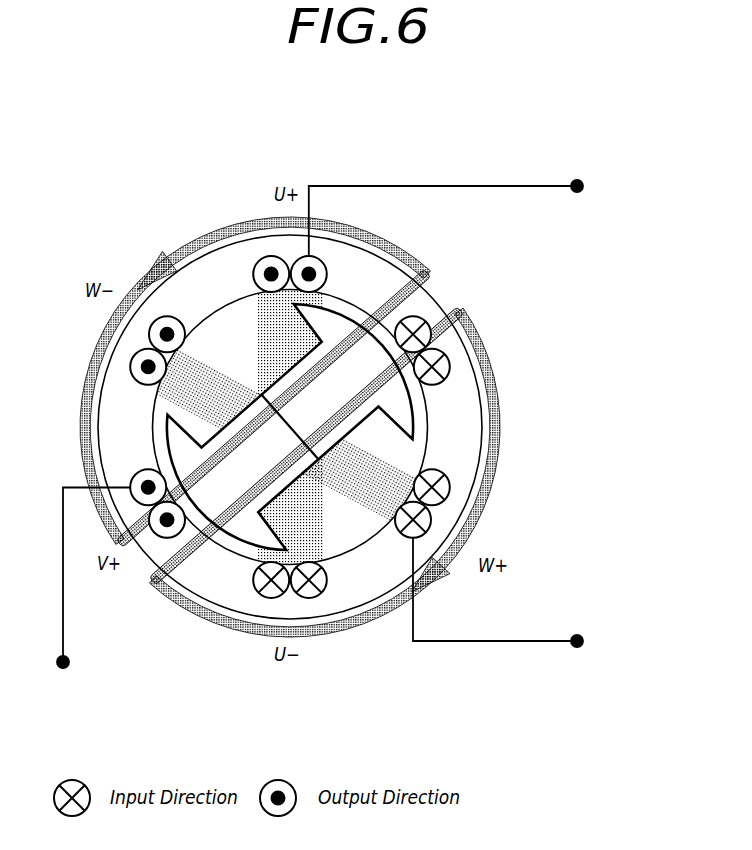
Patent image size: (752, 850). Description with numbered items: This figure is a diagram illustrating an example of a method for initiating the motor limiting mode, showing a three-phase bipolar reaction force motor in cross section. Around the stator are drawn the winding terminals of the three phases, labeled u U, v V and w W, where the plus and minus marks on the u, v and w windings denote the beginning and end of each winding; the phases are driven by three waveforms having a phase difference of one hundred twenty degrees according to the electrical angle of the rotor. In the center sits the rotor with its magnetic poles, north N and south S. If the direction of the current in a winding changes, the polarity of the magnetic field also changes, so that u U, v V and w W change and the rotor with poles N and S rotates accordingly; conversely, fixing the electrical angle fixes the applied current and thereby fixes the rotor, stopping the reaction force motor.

The u phase winding terminal U is at (458, 215).
The v phase winding terminal V is at (93, 593).
The w phase winding terminal W is at (514, 596).
The rotor north pole N is at (290, 427).
The rotor south pole S is at (290, 426).